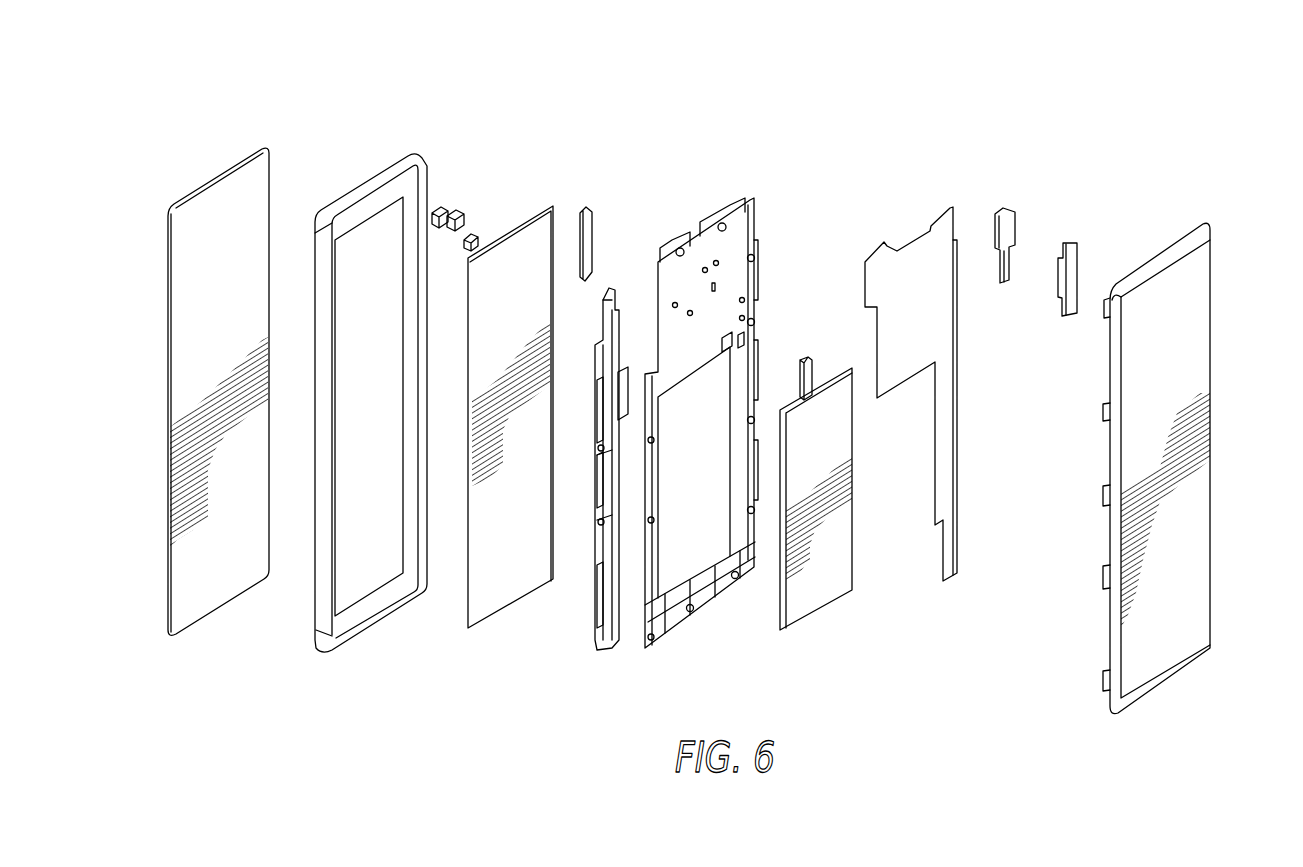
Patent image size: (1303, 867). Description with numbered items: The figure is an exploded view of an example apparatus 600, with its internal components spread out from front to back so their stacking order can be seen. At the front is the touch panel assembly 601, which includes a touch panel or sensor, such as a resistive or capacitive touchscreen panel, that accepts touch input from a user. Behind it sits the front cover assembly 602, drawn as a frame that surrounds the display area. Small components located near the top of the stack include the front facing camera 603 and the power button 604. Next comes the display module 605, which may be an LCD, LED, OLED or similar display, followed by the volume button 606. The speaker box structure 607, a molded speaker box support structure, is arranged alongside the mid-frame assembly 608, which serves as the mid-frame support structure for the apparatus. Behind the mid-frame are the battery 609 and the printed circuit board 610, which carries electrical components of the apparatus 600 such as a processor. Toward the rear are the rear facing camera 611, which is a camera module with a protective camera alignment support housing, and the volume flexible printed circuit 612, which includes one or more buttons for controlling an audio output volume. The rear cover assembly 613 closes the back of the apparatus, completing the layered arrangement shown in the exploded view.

The apparatus 600 is at (1228, 137).
The touch panel assembly 601 is at (199, 182).
The front cover assembly 602 is at (386, 173).
The front facing camera 603 is at (449, 203).
The power button 604 is at (471, 234).
The display module 605 is at (530, 218).
The volume button 606 is at (591, 233).
The speaker box structure 607 is at (614, 303).
The mid-frame assembly 608 is at (723, 213).
The battery 609 is at (827, 373).
The printed circuit board 610 is at (920, 250).
The rear facing camera 611 is at (1005, 222).
The volume flexible printed circuit 612 is at (1072, 253).
The rear cover assembly 613 is at (1172, 248).